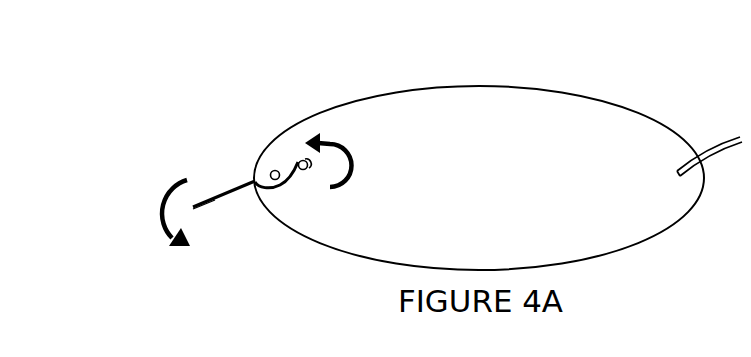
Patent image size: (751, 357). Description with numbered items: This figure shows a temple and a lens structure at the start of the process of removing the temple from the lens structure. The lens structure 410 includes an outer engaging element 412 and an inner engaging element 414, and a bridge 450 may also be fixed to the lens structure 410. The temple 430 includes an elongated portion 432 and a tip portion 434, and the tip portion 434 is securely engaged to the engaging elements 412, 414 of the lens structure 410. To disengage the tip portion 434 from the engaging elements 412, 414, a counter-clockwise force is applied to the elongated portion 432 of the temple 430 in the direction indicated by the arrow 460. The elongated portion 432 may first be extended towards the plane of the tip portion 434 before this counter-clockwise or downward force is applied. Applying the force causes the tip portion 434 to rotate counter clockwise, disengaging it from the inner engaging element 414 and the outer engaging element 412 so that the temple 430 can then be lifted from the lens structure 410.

The lens structure 410 is at (492, 93).
The outer engaging element 412 is at (273, 170).
The inner engaging element 414 is at (303, 171).
The temple 430 is at (238, 176).
The elongated portion 432 is at (207, 204).
The tip portion 434 is at (290, 166).
The bridge 450 is at (723, 140).
The arrow 460 is at (167, 232).